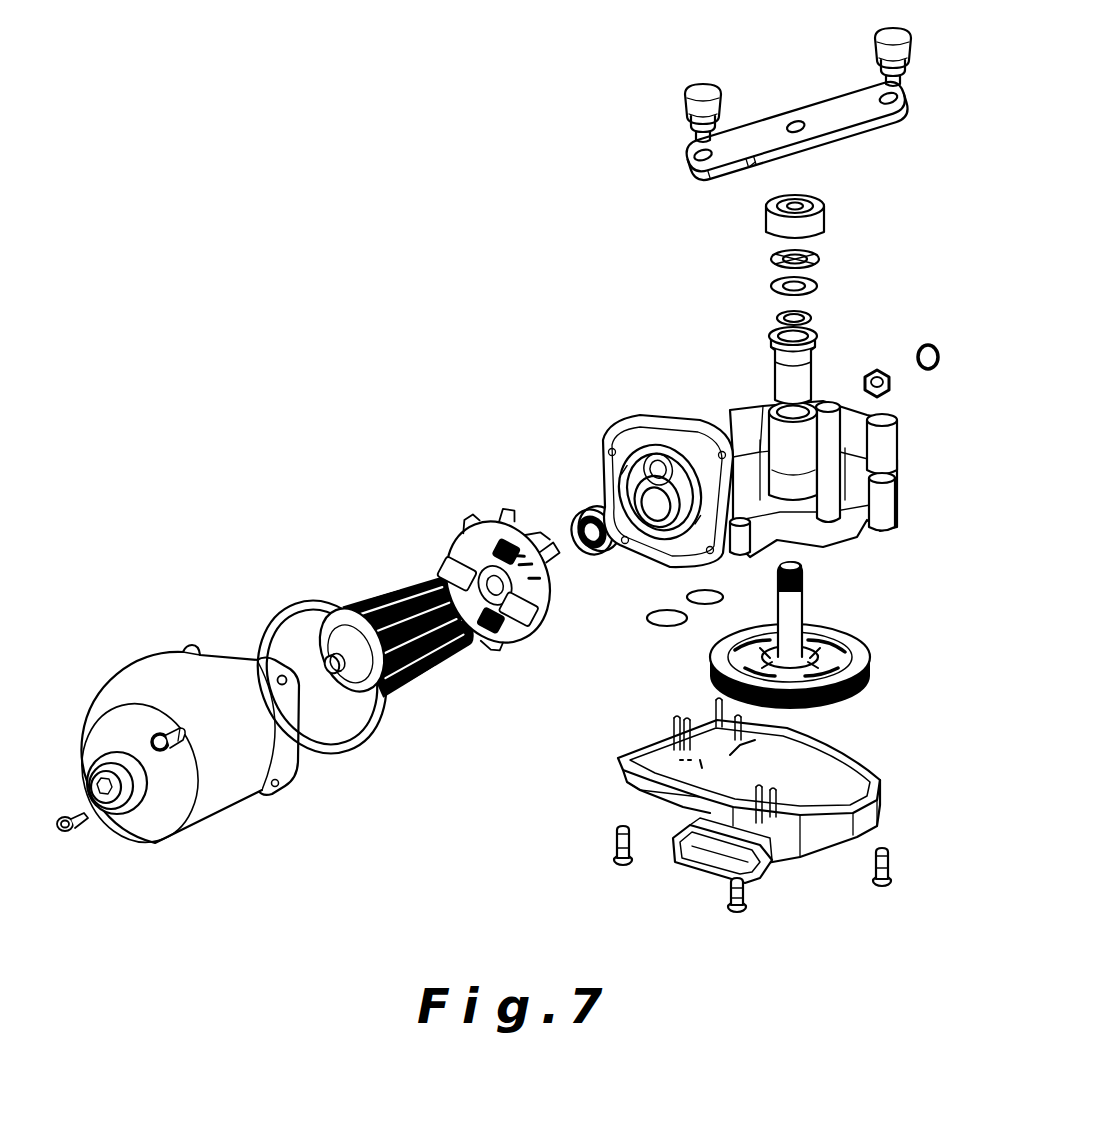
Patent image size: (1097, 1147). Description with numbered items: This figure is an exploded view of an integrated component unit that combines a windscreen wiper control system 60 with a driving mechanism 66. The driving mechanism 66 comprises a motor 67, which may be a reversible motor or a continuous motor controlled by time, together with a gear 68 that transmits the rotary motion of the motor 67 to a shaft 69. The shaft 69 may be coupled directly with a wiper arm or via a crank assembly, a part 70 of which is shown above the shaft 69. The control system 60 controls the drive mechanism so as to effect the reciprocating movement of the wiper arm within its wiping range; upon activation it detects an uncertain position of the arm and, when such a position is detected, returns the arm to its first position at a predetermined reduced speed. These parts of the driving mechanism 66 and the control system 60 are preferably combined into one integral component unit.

The windscreen wiper control system 60 is at (605, 752).
The driving mechanism 66 is at (486, 352).
The motor 67 is at (334, 525).
The gear 68 is at (853, 624).
The shaft 69 is at (842, 295).
The part of crank assembly 70 is at (628, 151).